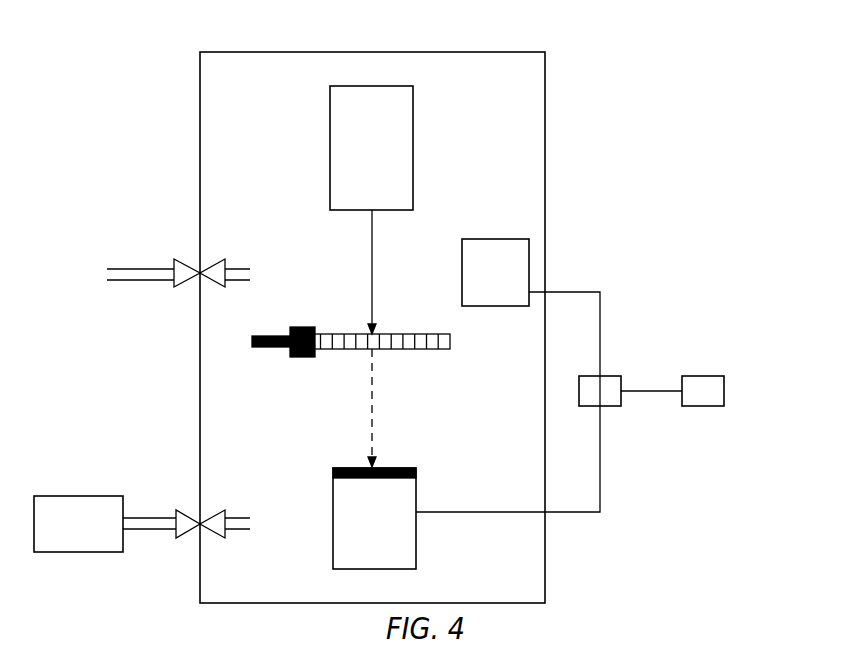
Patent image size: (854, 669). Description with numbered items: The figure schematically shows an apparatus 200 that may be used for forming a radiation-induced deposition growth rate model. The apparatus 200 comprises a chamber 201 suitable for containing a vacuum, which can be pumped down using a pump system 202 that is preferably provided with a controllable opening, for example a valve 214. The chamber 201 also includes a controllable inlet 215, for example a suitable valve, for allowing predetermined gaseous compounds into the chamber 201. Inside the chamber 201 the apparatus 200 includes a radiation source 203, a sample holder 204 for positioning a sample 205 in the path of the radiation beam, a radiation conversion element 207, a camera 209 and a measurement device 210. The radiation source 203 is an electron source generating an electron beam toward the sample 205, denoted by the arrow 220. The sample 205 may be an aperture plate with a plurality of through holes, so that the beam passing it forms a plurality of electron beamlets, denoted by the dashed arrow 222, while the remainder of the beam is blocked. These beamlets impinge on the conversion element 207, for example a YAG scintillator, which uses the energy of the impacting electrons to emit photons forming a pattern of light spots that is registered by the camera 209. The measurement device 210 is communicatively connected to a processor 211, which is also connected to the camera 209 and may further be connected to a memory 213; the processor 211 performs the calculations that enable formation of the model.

The apparatus 200 is at (564, 58).
The chamber 201 is at (545, 143).
The pump system 202 is at (65, 496).
The radiation source 203 is at (413, 117).
The sample holder 204 is at (252, 343).
The sample 205 is at (450, 343).
The radiation conversion element 207 is at (416, 470).
The camera 209 is at (416, 546).
The measurement device 210 is at (529, 249).
The processor 211 is at (612, 376).
The memory 213 is at (718, 376).
The valve 214 is at (187, 520).
The controllable inlet 215 is at (182, 268).
The arrow 220 is at (372, 259).
The dashed arrow 222 is at (372, 410).